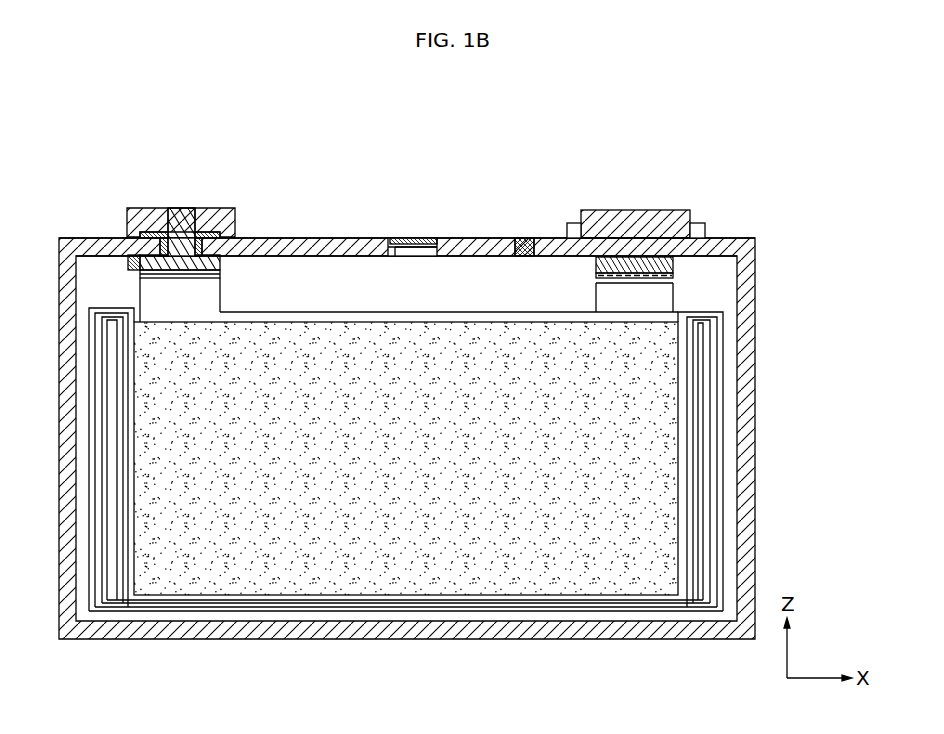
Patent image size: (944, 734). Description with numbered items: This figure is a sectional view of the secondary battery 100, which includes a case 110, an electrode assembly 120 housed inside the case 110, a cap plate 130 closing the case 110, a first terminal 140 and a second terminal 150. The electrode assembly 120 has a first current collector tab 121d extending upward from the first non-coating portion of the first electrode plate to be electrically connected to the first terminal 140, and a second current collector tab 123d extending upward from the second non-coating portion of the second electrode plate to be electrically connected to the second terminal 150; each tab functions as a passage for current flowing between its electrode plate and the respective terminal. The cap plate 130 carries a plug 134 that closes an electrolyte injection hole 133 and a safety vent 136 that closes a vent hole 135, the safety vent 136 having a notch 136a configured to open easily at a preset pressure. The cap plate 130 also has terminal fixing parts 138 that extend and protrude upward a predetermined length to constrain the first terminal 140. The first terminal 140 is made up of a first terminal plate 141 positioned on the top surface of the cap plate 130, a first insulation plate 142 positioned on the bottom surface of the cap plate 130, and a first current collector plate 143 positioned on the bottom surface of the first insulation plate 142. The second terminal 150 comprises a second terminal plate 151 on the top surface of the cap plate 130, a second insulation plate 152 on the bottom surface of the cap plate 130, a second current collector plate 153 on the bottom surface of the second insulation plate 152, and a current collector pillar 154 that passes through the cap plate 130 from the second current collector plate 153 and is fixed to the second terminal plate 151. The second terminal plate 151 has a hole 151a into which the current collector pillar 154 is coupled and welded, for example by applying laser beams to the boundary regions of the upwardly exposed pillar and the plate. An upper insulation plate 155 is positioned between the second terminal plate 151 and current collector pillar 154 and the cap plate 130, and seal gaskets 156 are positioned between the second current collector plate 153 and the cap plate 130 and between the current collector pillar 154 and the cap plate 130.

The secondary battery 100 is at (792, 162).
The case 110 is at (403, 632).
The electrode assembly 120 is at (264, 614).
The first current collector tab 121d is at (668, 300).
The second current collector tab 123d is at (203, 294).
The cap plate 130 is at (327, 237).
The electrolyte injection hole 133 is at (527, 256).
The plug 134 is at (525, 238).
The vent hole 135 is at (397, 248).
The safety vent 136 is at (395, 237).
The notch 136a is at (423, 238).
The terminal fixing part 138 is at (577, 227).
The first terminal 140 is at (638, 192).
The first terminal plate 141 is at (610, 212).
The first insulation plate 142 is at (695, 263).
The first current collector plate 143 is at (673, 273).
The second terminal 150 is at (163, 207).
The second terminal plate 151 is at (225, 213).
The hole 151a is at (167, 237).
The second insulation plate 152 is at (123, 263).
The second current collector plate 153 is at (210, 277).
The current collector pillar 154 is at (183, 210).
The upper insulation plate 155 is at (224, 238).
The seal gasket 156 is at (150, 240).